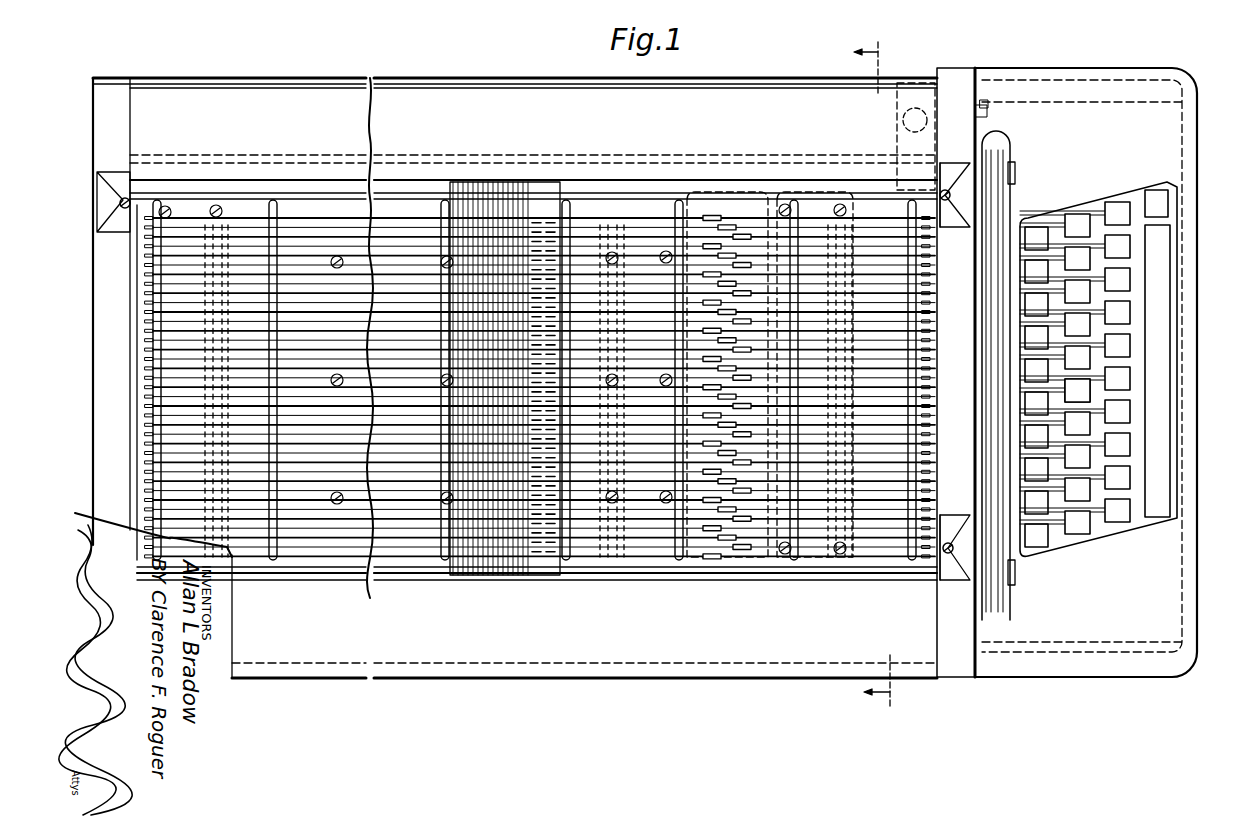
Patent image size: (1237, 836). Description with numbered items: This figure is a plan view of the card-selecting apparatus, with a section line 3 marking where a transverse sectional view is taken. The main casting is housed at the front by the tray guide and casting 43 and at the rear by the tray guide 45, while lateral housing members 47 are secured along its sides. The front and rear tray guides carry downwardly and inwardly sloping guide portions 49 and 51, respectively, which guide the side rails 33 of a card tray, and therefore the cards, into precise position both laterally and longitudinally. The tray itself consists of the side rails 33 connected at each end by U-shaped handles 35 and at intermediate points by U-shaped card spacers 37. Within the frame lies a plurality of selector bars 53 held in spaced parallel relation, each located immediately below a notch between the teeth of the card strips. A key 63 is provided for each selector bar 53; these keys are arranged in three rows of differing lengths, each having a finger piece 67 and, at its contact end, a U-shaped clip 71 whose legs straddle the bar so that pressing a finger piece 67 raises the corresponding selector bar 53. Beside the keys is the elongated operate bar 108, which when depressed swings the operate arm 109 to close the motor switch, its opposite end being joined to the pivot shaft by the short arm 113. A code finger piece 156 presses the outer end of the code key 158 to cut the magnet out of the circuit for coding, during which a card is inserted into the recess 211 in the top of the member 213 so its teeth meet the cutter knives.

The section line 3- 3 is at (890, 375).
The side rails 33 is at (810, 195).
The U-shaped handles 35 is at (128, 198).
The U-shaped card spacers 37 is at (681, 200).
The tray guide and casting 43 is at (960, 250).
The tray guide 45 is at (100, 352).
The lateral housing members 47 is at (497, 95).
The guide portions 49 is at (963, 193).
The guide portions 51 is at (108, 185).
The selector bars 53 is at (592, 225).
The key 63 is at (1095, 378).
The finger piece 67 is at (1078, 262).
The U-shaped clip 71 is at (713, 210).
The operate key or bar 108 is at (1160, 307).
The operate arm 109 is at (1112, 217).
The short arm 113 is at (1150, 520).
The code finger piece 156 is at (1163, 205).
The code key 158 is at (1140, 193).
The recess 211 is at (989, 560).
The member 213 is at (1020, 560).